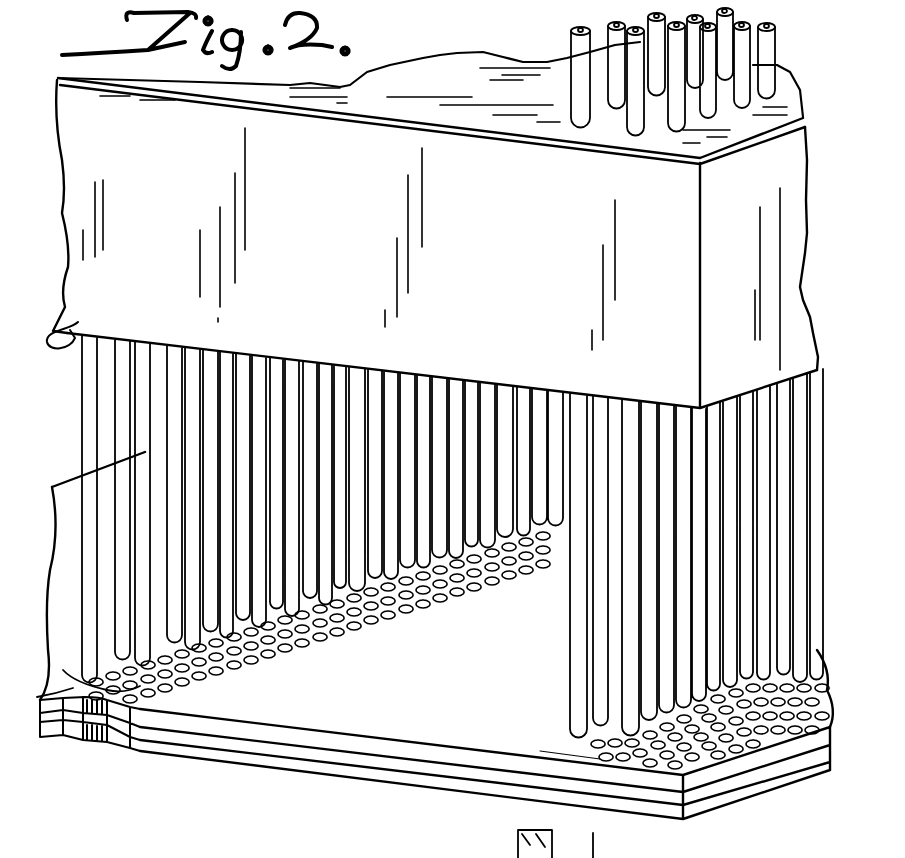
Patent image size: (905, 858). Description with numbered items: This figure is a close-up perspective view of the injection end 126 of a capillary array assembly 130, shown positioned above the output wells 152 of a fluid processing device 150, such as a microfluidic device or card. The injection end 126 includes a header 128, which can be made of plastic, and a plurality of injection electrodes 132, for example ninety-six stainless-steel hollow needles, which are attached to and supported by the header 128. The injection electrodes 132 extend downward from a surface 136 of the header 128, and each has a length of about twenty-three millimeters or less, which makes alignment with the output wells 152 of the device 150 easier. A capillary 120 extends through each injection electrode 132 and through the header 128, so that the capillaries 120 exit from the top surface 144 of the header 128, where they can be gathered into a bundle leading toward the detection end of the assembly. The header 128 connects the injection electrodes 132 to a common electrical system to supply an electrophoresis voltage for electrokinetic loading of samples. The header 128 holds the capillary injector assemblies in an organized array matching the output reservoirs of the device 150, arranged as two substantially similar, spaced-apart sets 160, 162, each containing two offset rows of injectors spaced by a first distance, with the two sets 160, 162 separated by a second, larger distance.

The capillary 120 is at (613, 47).
The injection end 126 is at (35, 70).
The header 128 is at (185, 157).
The capillary array assembly 130 is at (815, 204).
The injection electrode 132 is at (576, 649).
The surface of the header 136 is at (78, 322).
The top surface of the header 144 is at (448, 86).
The fluid processing device 150 is at (383, 725).
The output wells 152 is at (146, 665).
The first set of capillary injector assemblies 160 is at (63, 740).
The second set of capillary injector assemblies 162 is at (637, 740).